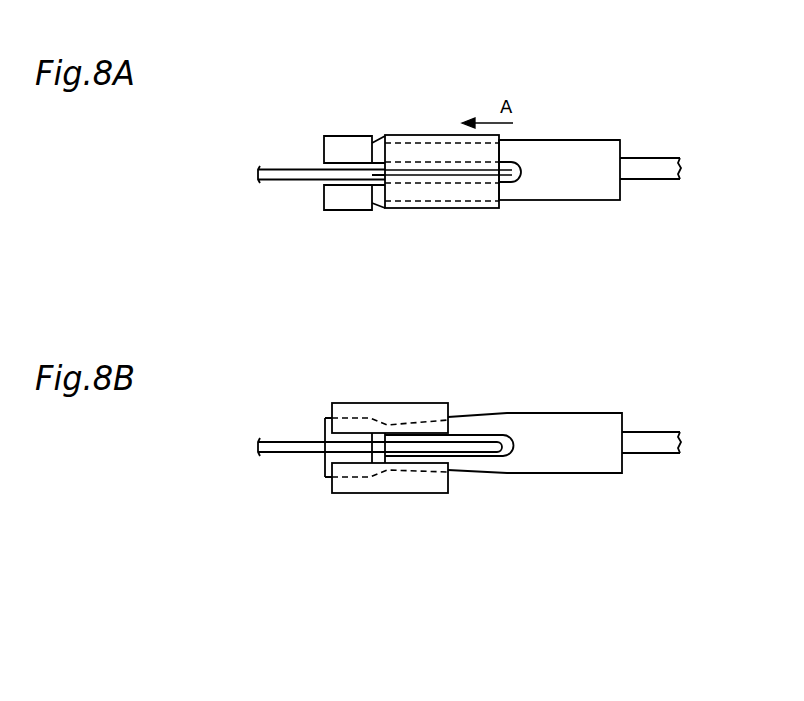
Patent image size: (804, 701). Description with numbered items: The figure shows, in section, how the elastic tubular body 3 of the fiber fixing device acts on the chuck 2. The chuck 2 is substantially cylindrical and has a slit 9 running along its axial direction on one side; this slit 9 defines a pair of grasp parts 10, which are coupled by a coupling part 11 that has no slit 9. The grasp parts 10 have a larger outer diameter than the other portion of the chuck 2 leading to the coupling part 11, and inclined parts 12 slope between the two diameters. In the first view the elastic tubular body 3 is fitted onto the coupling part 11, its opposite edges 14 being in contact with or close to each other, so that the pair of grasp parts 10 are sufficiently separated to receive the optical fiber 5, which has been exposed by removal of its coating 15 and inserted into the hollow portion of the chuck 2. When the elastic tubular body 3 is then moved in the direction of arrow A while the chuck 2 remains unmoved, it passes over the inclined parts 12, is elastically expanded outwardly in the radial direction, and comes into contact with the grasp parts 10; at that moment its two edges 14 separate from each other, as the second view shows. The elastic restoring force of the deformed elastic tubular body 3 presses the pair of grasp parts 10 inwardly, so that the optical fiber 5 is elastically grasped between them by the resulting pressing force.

In FIG. 8A, the chuck 2 is at (540, 190).
In FIG. 8B, the chuck 2 is at (540, 463).
In FIG. 8A, the elastic tubular body 3 is at (423, 212).
In FIG. 8B, the elastic tubular body 3 is at (383, 495).
In FIG. 8A, the optical fiber 5 is at (277, 185).
In FIG. 8B, the optical fiber 5 is at (275, 456).
In FIG. 8A, the slit 9 is at (515, 160).
In FIG. 8B, the slit 9 is at (335, 448).
In FIG. 8A, the grasp parts 10 is at (337, 147).
In FIG. 8B, the grasp parts 10 is at (325, 418).
In FIG. 8A, the coupling part 11 is at (555, 153).
In FIG. 8B, the coupling part 11 is at (555, 430).
In FIG. 8A, the inclined parts 12 is at (375, 208).
In FIG. 8A, the edges 14 is at (445, 170).
In FIG. 8B, the edges 14 is at (417, 412).
In FIG. 8A, the coating 15 is at (657, 177).
In FIG. 8B, the coating 15 is at (657, 453).